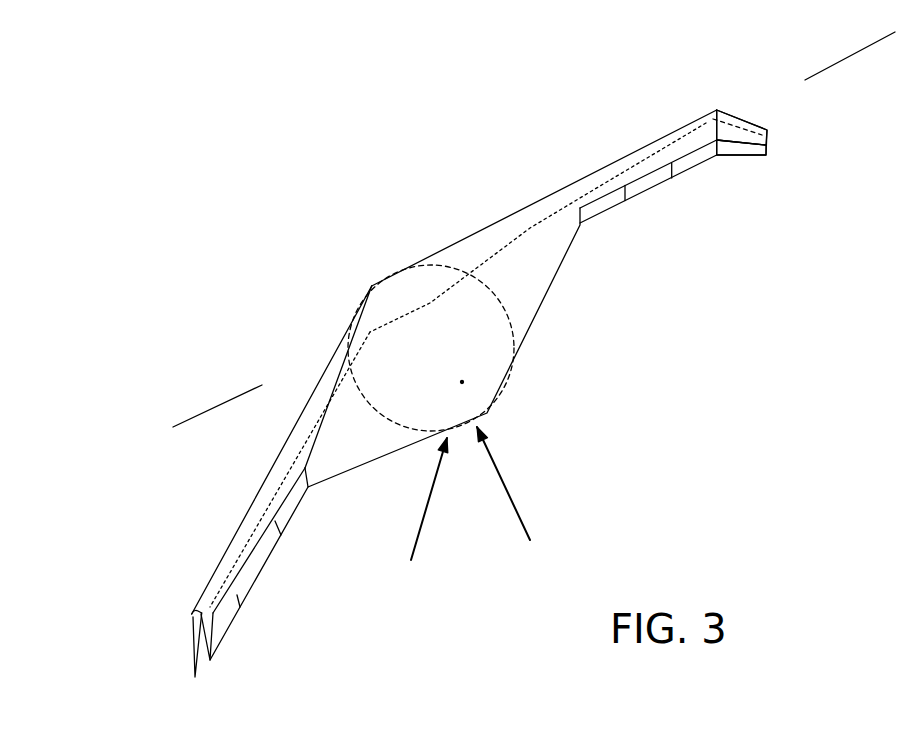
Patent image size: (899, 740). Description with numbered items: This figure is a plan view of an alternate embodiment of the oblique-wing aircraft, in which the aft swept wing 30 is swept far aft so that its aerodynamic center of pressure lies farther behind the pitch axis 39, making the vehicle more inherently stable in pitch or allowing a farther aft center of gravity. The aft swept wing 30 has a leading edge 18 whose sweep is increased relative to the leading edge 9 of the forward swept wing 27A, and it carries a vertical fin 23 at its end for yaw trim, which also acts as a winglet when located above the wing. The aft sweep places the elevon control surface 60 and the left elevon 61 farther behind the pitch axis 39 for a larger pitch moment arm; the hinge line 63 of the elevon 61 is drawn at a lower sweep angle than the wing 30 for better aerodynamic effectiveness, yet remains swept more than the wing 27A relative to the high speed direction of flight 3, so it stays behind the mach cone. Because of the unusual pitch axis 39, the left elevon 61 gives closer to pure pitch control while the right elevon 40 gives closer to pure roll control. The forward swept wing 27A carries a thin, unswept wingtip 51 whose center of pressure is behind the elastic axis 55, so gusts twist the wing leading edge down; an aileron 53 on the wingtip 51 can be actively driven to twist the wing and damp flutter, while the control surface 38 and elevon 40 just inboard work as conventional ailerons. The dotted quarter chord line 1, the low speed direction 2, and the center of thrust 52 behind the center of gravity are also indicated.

The quarter chord line 1 is at (698, 122).
The low speed direction 2 is at (530, 527).
The high speed direction of flight 3 is at (430, 502).
The leading edge 9 is at (507, 215).
The leading edge 18 is at (249, 508).
The vertical fin 23 is at (193, 645).
The forward swept wing 27A is at (645, 160).
The aft swept wing 30 is at (231, 578).
The control surface 38 is at (651, 185).
The pitch axis 39 is at (190, 412).
The right elevon 40 is at (695, 165).
The wingtip 51 is at (744, 139).
The center of thrust 52 is at (465, 375).
The aileron 53 is at (740, 155).
The elastic axis 55 is at (850, 57).
The elevon control surface 60 is at (281, 526).
The left elevon 61 is at (226, 617).
The hinge line 63 is at (211, 610).